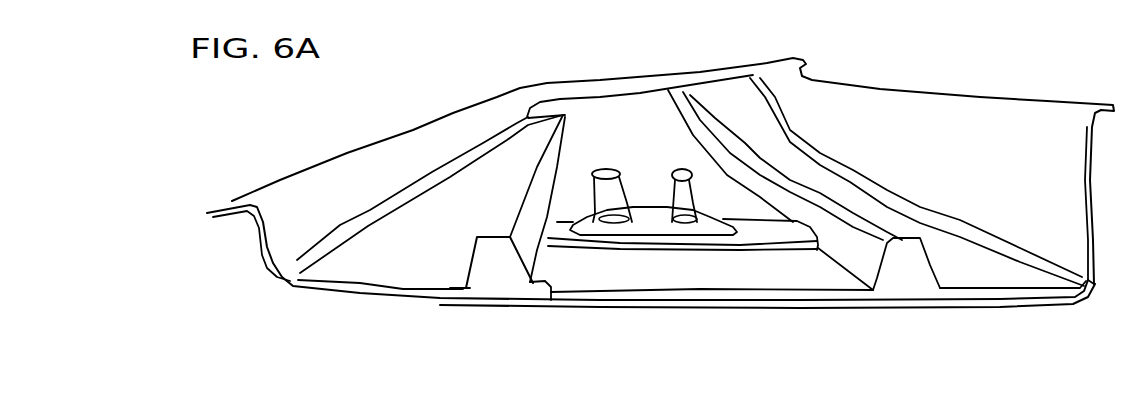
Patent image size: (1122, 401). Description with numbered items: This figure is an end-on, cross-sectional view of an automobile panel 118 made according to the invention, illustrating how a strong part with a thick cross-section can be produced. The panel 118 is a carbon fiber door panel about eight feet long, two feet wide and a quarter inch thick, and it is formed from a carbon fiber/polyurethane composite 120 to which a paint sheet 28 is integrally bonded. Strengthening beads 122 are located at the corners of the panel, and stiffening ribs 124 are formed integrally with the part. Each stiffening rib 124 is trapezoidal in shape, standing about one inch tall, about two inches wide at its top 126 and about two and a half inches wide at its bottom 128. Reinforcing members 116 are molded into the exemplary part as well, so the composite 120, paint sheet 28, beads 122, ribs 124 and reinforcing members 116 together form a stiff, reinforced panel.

The paint sheet 28 is at (625, 307).
The reinforcing members 116 is at (610, 170).
The automobile panel 118 is at (300, 290).
The carbon fiber/polyurethane composite 120 is at (430, 237).
The strengthening beads 122 is at (293, 281).
The stiffening ribs 124 is at (492, 283).
The top of stiffening rib 126 is at (507, 240).
The bottom of stiffening rib 128 is at (530, 283).